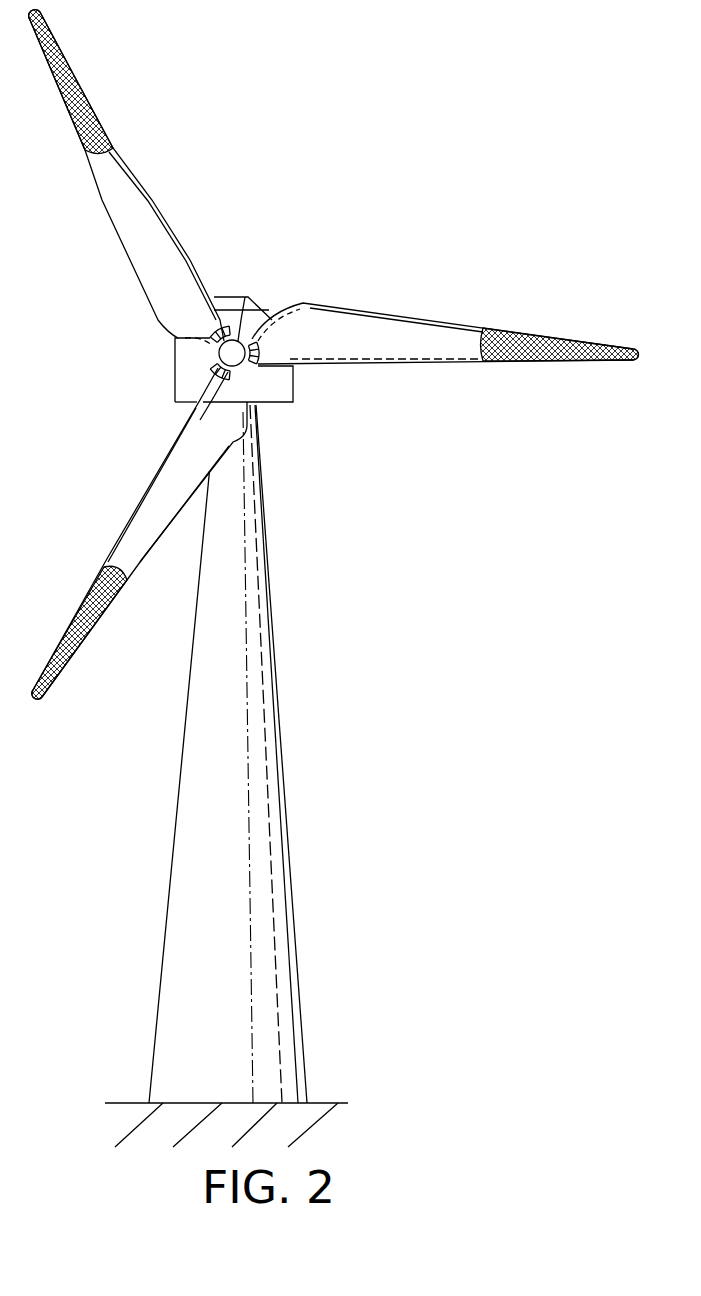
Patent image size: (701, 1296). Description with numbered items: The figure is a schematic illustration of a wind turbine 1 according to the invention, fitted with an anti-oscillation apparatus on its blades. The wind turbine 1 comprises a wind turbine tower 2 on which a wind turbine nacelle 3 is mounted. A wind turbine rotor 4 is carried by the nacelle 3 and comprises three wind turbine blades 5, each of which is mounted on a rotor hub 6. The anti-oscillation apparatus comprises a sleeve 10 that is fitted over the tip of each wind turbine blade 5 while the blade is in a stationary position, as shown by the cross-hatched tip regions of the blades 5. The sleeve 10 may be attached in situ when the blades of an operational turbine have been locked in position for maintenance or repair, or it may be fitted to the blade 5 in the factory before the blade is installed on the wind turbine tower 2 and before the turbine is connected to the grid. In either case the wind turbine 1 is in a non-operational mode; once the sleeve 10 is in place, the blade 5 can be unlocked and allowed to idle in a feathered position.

The wind turbine 1 is at (453, 935).
The wind turbine tower 2 is at (285, 798).
The wind turbine nacelle 3 is at (289, 387).
The wind turbine rotor 4 is at (406, 152).
The wind turbine blade 5 is at (430, 322).
The rotor hub 6 is at (245, 297).
The sleeve 10 is at (52, 71).